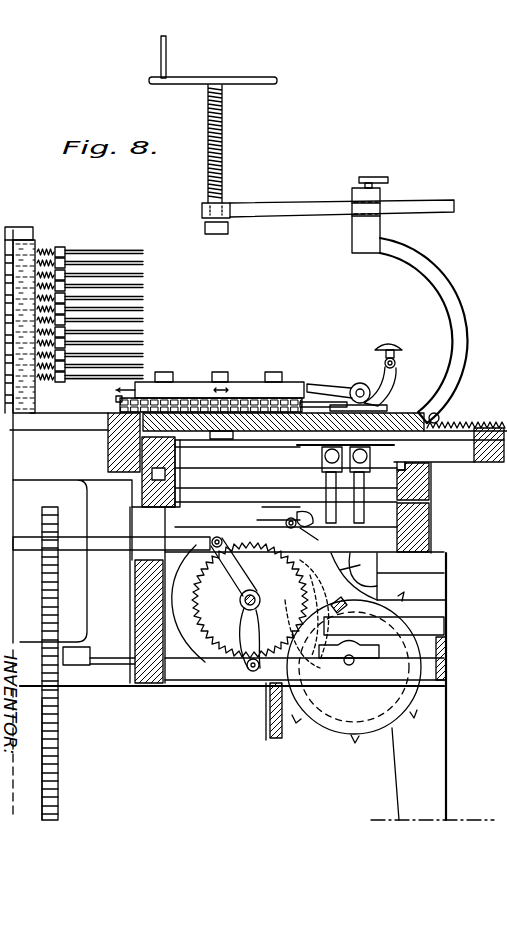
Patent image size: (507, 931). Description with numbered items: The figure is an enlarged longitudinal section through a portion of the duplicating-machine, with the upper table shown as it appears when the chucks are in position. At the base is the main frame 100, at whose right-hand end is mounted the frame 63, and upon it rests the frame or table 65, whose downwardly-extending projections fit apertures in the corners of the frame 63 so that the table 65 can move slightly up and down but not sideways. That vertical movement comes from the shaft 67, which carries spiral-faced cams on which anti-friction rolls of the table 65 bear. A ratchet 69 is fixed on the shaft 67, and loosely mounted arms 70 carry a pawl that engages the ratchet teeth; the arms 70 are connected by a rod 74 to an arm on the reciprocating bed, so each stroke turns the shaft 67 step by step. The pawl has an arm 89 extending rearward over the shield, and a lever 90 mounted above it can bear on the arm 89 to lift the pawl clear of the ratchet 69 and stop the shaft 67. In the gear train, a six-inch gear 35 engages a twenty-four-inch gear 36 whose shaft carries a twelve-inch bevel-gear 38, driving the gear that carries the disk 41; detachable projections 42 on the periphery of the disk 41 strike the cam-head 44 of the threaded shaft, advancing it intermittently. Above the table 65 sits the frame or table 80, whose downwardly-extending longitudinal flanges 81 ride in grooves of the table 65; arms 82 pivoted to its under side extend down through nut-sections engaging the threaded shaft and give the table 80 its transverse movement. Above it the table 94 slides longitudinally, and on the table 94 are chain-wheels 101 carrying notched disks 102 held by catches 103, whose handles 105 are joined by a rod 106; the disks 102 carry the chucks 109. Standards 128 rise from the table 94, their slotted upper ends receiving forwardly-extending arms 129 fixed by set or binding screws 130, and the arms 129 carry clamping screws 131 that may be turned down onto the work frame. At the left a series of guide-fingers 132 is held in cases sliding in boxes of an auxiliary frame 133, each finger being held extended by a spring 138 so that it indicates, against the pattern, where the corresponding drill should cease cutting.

The clamping screws 131 is at (213, 135).
The set or binding screws 130 is at (367, 176).
The forwardly-extending arms 129 is at (342, 198).
The standards 128 is at (452, 298).
The handles 105 is at (385, 343).
The rod 106 is at (397, 362).
The catches 103 is at (376, 387).
The chucks 109 is at (240, 387).
The disks 102 is at (118, 403).
The table 94 is at (401, 412).
The auxiliary frame 133 is at (19, 227).
The spring 138 is at (50, 251).
The guide-fingers 132 is at (143, 277).
The chain-wheels 101 is at (69, 410).
The frame 100 is at (257, 525).
The frame or table 80 is at (465, 443).
The downwardly-extending longitudinal flanges 81 is at (403, 465).
The frame or table 65 is at (430, 489).
The frame 63 is at (430, 539).
The arms 82 is at (325, 482).
The arm 89 is at (280, 520).
The lever 90 is at (308, 527).
The rod 74 is at (111, 538).
The six-inch gear 35 is at (40, 520).
The twenty-four-inch gear 36 is at (60, 735).
The arm or arms 70 is at (250, 597).
The ratchet 69 is at (197, 603).
The shaft 67 is at (271, 615).
The disk 41 is at (354, 667).
The detachable projections 42 is at (352, 736).
The cam-head 44 is at (356, 558).
The twelve-inch bevel-gear 38 is at (263, 738).